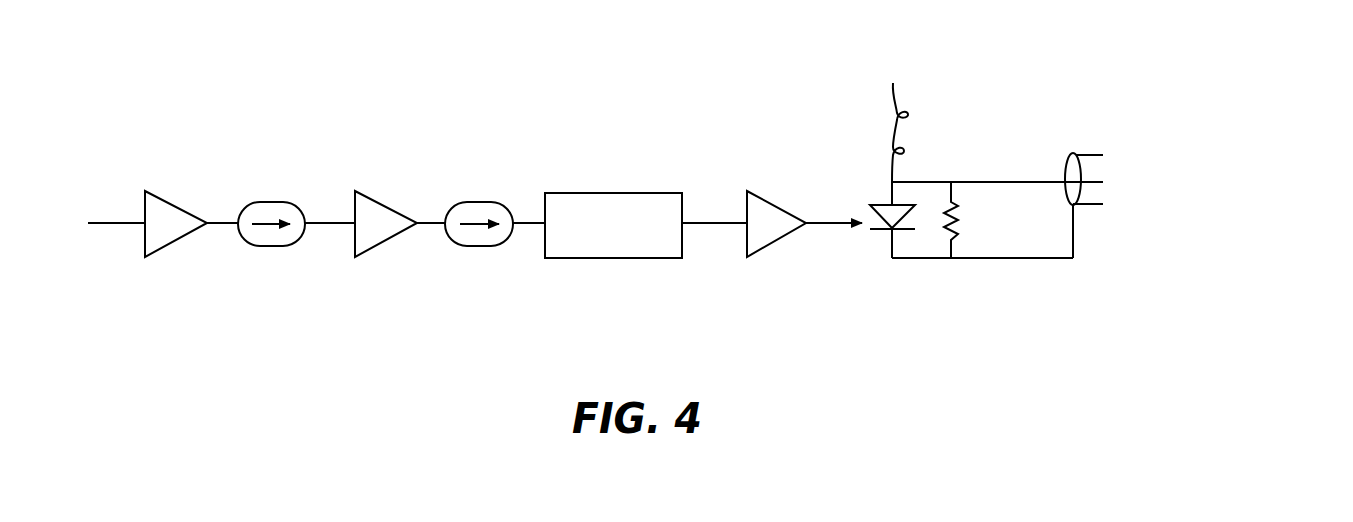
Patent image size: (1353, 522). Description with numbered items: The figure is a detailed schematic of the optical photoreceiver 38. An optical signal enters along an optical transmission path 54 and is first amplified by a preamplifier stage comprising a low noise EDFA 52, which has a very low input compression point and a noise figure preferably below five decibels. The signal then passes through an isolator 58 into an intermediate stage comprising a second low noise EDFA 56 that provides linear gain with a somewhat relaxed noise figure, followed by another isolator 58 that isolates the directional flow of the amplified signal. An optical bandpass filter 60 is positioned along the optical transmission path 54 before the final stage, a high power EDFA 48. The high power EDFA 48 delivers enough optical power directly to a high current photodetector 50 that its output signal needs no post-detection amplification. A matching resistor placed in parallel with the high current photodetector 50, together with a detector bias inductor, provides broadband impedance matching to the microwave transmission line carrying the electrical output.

The optical photoreceiver 38 is at (411, 119).
The low noise EDFA 52 is at (158, 190).
The optical transmission path 54 is at (213, 222).
The isolators 58 is at (305, 168).
The low noise EDFA 56 is at (370, 168).
The optical bandpass filter 60 is at (632, 168).
The high power EDFA 48 is at (793, 168).
The high current photodetector 50 is at (878, 200).